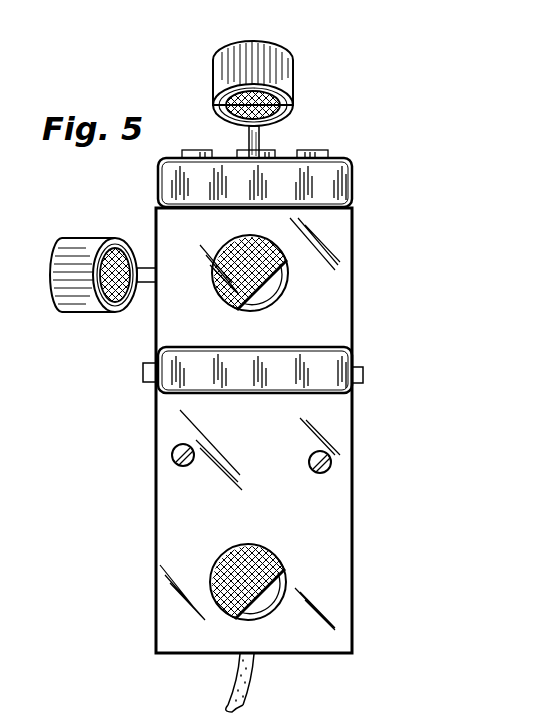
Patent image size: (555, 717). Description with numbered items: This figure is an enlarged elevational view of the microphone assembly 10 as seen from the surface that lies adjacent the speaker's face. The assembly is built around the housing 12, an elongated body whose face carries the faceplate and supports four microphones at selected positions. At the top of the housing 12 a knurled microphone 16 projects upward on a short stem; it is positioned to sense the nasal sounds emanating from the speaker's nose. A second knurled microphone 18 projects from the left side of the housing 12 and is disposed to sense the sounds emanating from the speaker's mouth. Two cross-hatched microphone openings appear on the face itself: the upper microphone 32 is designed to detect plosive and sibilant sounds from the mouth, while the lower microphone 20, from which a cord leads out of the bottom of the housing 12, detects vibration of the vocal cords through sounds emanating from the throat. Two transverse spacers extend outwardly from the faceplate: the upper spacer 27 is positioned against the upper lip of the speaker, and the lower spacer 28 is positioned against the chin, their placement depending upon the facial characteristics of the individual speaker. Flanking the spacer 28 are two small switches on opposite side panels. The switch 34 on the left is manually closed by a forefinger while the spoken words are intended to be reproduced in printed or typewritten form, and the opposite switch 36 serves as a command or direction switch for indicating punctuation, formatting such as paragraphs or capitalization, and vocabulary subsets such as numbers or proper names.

The microphone assembly 10 is at (135, 492).
The housing 12 is at (328, 240).
The microphone 16 is at (228, 59).
The microphone 18 is at (73, 318).
The microphone 20 is at (263, 600).
The spacer 27 is at (285, 178).
The spacer 28 is at (275, 390).
The microphone 32 is at (258, 300).
The switch 34 is at (143, 372).
The switch 36 is at (360, 365).